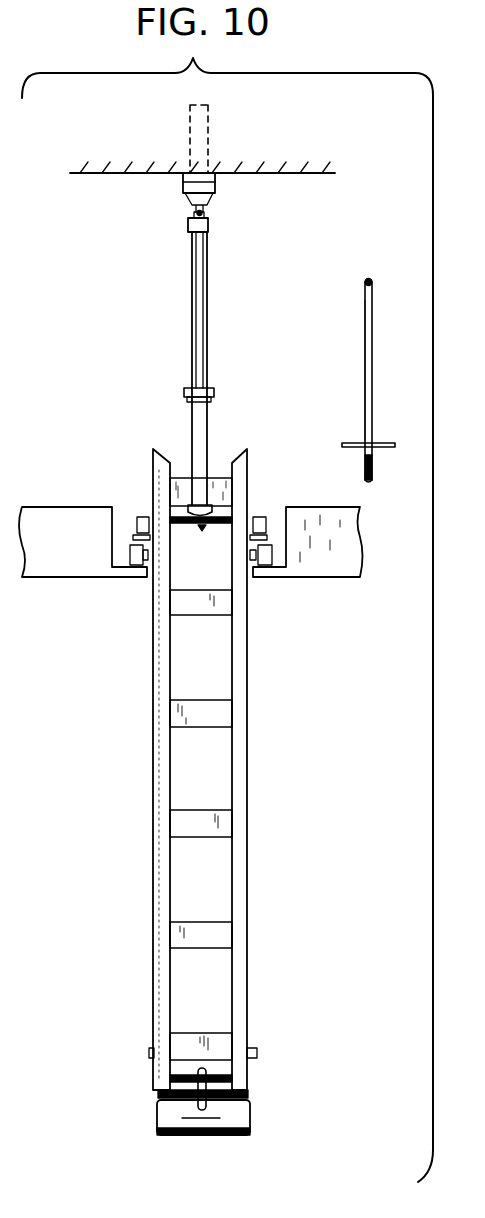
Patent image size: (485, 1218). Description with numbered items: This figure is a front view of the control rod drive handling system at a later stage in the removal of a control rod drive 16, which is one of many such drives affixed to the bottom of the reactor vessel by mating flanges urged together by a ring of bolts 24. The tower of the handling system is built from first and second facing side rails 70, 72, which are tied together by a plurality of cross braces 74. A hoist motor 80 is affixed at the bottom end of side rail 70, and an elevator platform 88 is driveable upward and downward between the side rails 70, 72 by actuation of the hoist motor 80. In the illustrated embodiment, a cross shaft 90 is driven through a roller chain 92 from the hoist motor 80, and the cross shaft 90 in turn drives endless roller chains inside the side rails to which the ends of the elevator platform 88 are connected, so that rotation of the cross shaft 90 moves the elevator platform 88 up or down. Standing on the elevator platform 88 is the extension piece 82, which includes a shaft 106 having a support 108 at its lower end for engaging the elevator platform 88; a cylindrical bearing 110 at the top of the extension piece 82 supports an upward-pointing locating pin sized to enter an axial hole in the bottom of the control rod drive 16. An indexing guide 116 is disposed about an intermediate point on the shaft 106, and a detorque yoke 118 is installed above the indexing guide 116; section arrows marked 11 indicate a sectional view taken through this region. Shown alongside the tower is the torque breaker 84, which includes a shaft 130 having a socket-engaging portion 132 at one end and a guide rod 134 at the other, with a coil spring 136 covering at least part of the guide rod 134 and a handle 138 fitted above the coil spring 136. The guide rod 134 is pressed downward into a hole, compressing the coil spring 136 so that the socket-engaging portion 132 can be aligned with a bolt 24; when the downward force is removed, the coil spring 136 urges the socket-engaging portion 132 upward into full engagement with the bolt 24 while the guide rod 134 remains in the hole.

The section line 11 is at (166, 372).
The control rod drive 16 is at (209, 150).
The bolt 24 is at (183, 196).
The first side rail 70 is at (153, 706).
The second side rail 72 is at (248, 625).
The cross brace 74 is at (220, 715).
The hoist motor 80 is at (160, 1132).
The extension piece 82 is at (208, 288).
The torque breaker 84 is at (372, 390).
The elevator platform 88 is at (175, 514).
The cross shaft 90 is at (222, 1074).
The roller chain 92 is at (196, 1082).
The shaft 106 is at (196, 306).
The support 108 is at (192, 506).
The cylindrical bearing 110 is at (210, 223).
The indexing guide 116 is at (190, 400).
The detorque yoke 118 is at (185, 392).
The shaft 130 is at (366, 328).
The socket-engaging portion 132 is at (386, 252).
The guide rod 134 is at (368, 479).
The coil spring 136 is at (366, 464).
The handle 138 is at (351, 442).